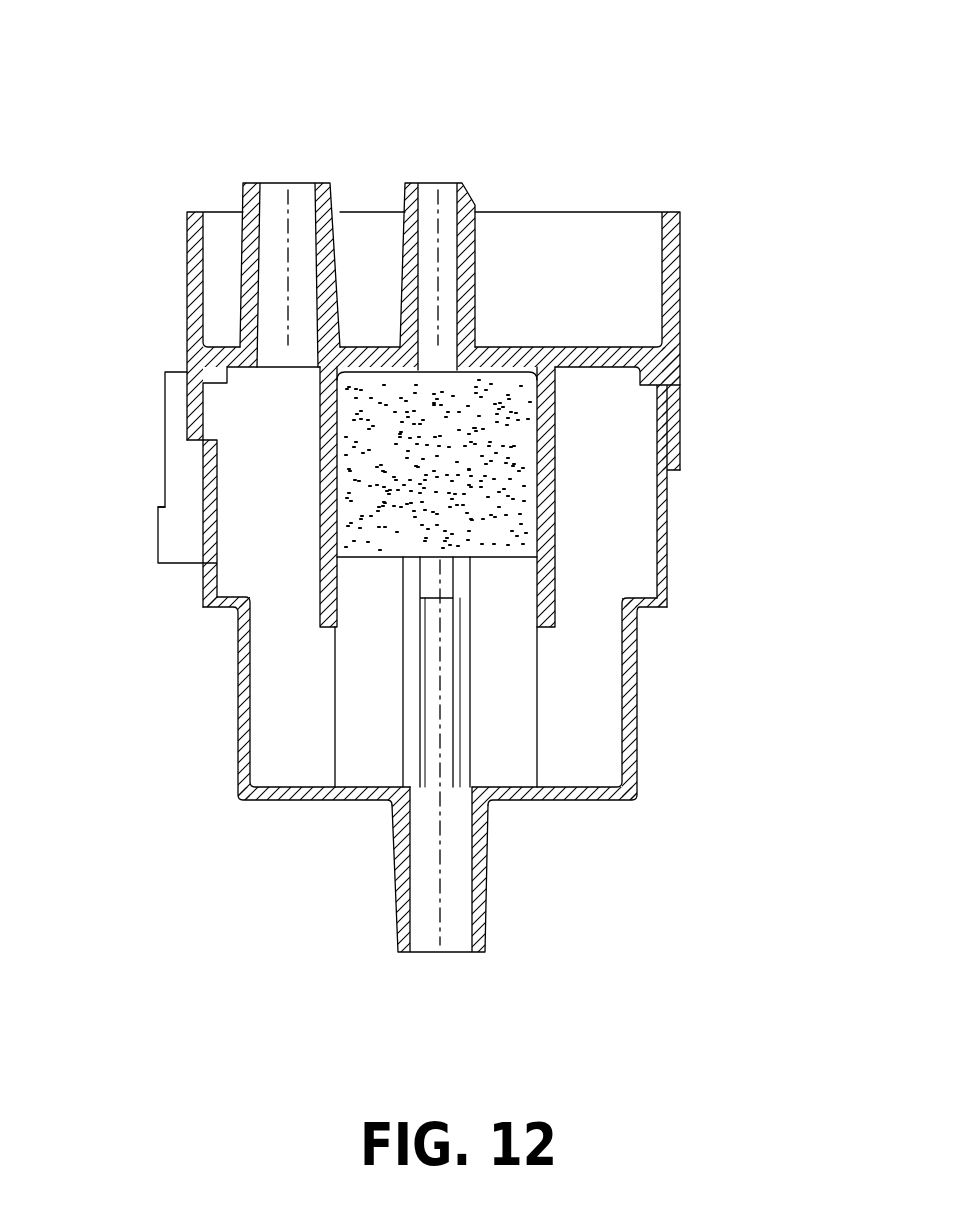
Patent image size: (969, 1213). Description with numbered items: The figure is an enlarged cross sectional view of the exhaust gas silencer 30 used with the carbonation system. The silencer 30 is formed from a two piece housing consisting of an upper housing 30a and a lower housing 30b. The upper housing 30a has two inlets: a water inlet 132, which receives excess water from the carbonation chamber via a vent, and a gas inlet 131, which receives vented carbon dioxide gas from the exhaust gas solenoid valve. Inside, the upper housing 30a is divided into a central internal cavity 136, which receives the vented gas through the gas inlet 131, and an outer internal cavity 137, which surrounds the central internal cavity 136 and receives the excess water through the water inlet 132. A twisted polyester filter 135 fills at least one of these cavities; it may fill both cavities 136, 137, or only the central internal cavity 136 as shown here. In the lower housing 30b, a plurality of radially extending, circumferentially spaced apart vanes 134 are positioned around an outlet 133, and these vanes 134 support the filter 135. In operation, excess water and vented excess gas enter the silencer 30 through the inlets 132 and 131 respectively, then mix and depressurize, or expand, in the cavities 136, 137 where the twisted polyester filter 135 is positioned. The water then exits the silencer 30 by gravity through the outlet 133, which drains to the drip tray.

The exhaust gas silencer 30 is at (676, 120).
The upper housing 30a is at (187, 298).
The lower housing 30b is at (241, 696).
The gas inlet 131 is at (445, 182).
The water inlet 132 is at (307, 183).
The outlet 133 is at (460, 940).
The vanes 134 is at (528, 708).
The twisted polyester filter 135 is at (497, 513).
The central internal cavity 136 is at (530, 432).
The outer internal cavity 137 is at (228, 576).